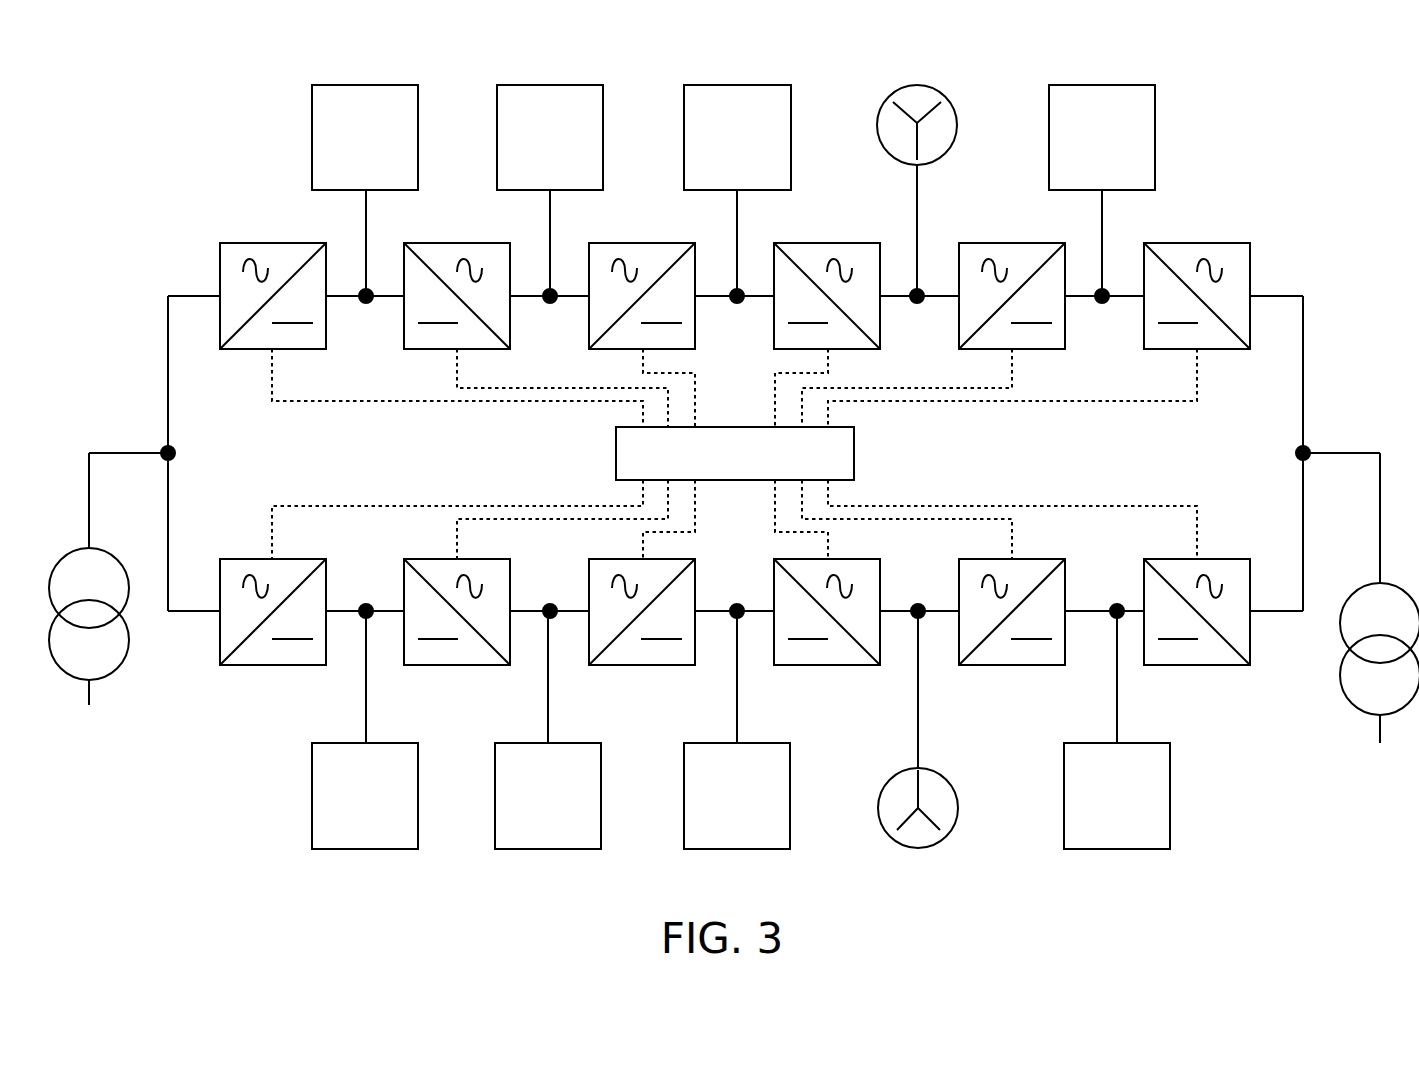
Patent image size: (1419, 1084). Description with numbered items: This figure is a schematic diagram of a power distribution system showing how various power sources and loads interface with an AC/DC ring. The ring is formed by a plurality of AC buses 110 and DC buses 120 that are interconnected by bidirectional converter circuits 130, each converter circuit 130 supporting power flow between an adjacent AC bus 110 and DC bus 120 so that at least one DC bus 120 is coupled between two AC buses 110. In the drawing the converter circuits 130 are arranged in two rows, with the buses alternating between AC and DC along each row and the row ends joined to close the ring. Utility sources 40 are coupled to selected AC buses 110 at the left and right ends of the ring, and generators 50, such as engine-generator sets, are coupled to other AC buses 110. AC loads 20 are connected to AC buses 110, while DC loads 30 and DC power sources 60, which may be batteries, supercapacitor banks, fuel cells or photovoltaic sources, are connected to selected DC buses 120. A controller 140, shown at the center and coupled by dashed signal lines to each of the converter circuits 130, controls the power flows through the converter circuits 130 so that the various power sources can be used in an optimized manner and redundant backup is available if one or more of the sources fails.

The AC load 20 is at (550, 85).
The DC load 30 is at (366, 85).
The utility source 40 is at (1340, 678).
The generator 50 is at (917, 85).
The DC power source 60 is at (737, 85).
The AC bus 110 is at (192, 296).
The DC bus 120 is at (390, 296).
The bidirectional converter circuit 130 is at (272, 243).
The controller 140 is at (854, 453).